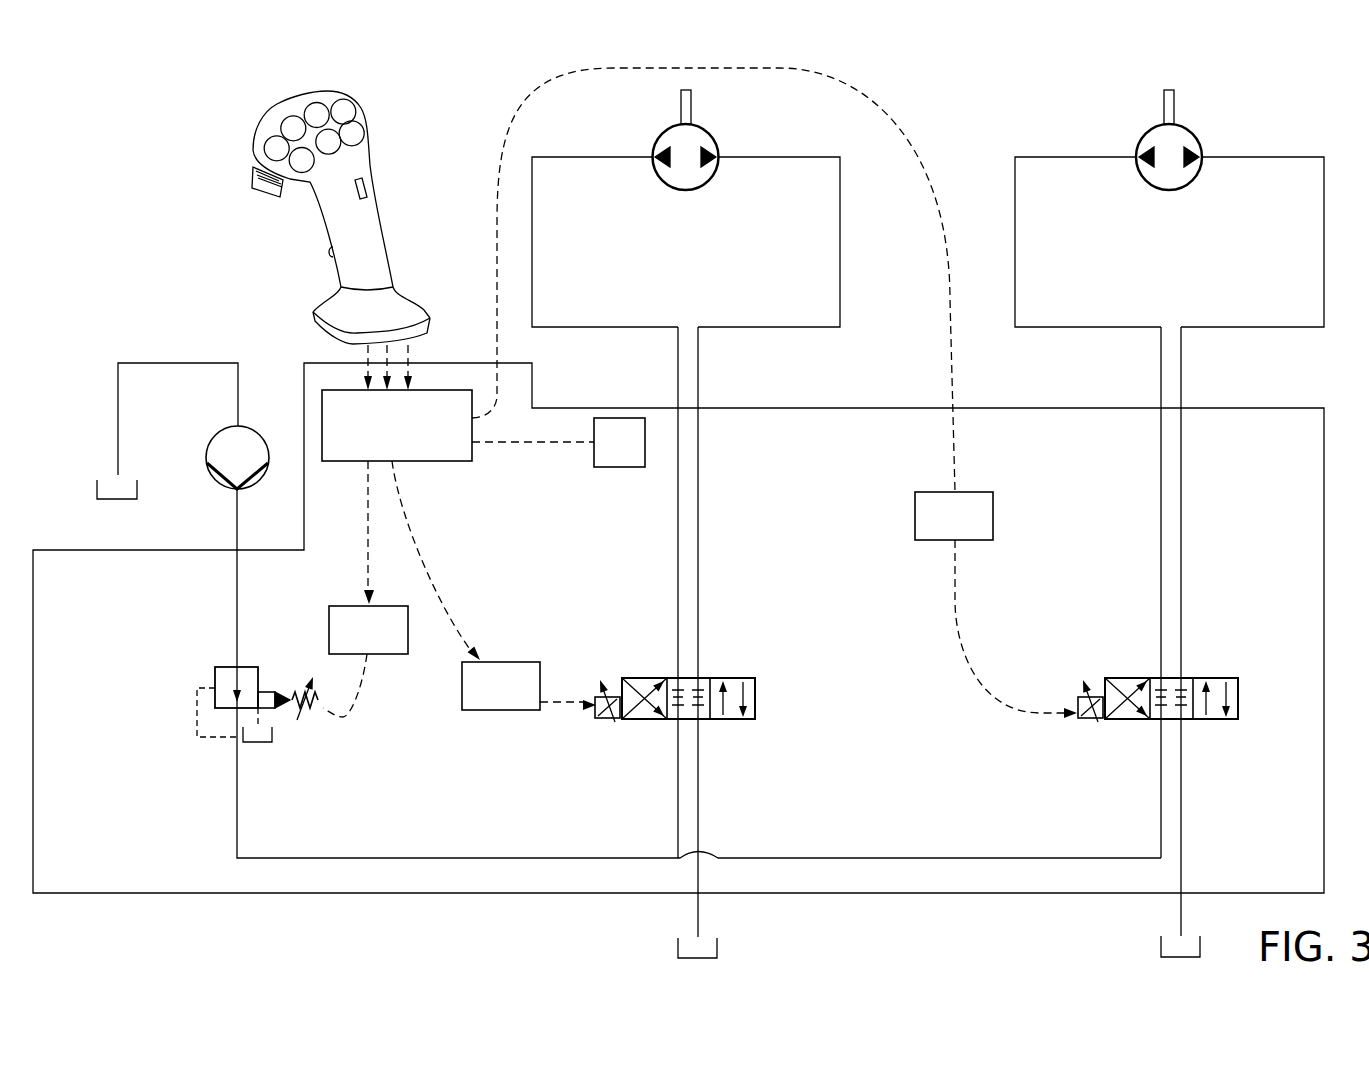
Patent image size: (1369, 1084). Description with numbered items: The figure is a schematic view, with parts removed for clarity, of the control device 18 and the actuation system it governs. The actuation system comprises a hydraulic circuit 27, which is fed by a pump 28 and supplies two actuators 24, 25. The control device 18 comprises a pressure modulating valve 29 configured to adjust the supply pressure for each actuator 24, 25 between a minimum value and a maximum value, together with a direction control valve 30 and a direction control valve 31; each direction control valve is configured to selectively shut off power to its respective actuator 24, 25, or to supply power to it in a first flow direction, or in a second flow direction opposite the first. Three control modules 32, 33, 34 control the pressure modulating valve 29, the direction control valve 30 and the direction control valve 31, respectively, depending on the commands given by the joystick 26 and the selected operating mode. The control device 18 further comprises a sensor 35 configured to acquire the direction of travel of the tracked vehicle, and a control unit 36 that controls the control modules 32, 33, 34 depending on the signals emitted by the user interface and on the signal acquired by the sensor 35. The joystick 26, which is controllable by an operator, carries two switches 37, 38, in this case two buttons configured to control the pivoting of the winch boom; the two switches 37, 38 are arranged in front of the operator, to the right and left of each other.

The control device 18 is at (578, 400).
The actuator 24 is at (693, 137).
The actuator 25 is at (1177, 137).
The joystick 26 is at (370, 223).
The hydraulic circuit 27 is at (257, 192).
The pump 28 is at (243, 450).
The pressure modulating valve 29 is at (222, 677).
The direction control valve 30 is at (730, 688).
The direction control valve 31 is at (1197, 682).
The control module 32 is at (343, 637).
The control module 33 is at (505, 675).
The control module 34 is at (968, 505).
The sensor 35 is at (617, 454).
The control unit 36 is at (442, 452).
The switch 37 is at (352, 133).
The switch 38 is at (328, 141).